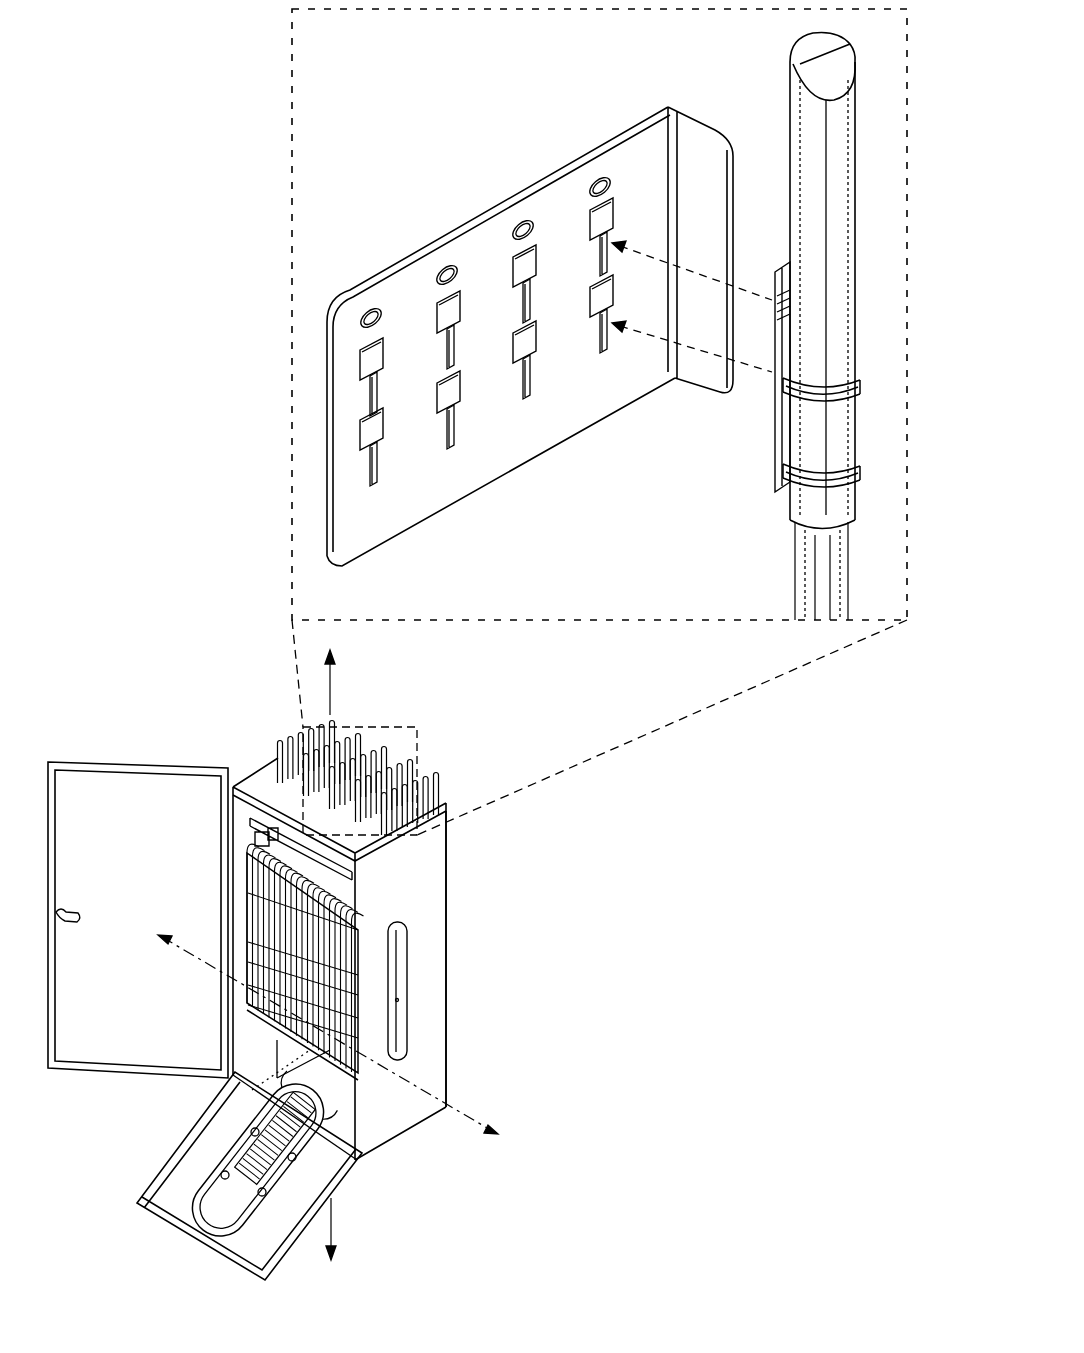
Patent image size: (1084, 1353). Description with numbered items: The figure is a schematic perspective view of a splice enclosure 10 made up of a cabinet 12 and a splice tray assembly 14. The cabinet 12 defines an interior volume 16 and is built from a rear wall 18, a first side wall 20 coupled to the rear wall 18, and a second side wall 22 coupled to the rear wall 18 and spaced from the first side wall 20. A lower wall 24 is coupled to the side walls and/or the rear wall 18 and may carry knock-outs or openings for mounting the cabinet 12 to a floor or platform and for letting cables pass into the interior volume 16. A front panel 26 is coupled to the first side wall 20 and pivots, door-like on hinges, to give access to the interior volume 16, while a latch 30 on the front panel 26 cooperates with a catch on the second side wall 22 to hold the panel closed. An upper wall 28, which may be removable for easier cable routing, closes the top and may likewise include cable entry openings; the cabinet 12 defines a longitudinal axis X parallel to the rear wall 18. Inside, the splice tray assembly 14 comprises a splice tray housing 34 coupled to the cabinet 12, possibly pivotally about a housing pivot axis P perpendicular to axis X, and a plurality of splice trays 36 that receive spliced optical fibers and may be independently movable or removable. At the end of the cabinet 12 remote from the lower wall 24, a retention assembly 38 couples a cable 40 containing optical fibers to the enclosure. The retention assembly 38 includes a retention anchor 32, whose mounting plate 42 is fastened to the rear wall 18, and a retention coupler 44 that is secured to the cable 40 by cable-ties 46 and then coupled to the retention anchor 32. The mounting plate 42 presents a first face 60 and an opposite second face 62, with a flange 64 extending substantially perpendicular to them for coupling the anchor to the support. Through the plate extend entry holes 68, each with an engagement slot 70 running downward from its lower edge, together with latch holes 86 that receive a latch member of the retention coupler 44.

The splice enclosure 10 is at (135, 700).
The cabinet 12 is at (422, 877).
The splice tray assembly 14 is at (374, 915).
The interior volume 16 is at (240, 816).
The rear wall 18 is at (449, 850).
The first side wall 20 is at (240, 1045).
The second side wall 22 is at (440, 1025).
The lower wall 24 is at (350, 1113).
The front panel 26 is at (83, 775).
The upper wall 28 is at (262, 782).
The latch 30 is at (66, 904).
The retention anchor 32 is at (532, 157).
The splice tray housing 34 is at (255, 843).
The splice trays 36 is at (325, 968).
The retention assembly 38 is at (592, 82).
The cable 40 is at (838, 200).
The mounting plate 42 is at (487, 232).
The retention coupler 44 is at (772, 460).
The cable-ties 46 is at (862, 383).
The first face 60 is at (460, 490).
The second face 62 is at (326, 405).
The flange 64 is at (700, 128).
The entry holes 68 is at (384, 352).
The engagement slot 70 is at (378, 398).
The latch holes 86 is at (377, 312).